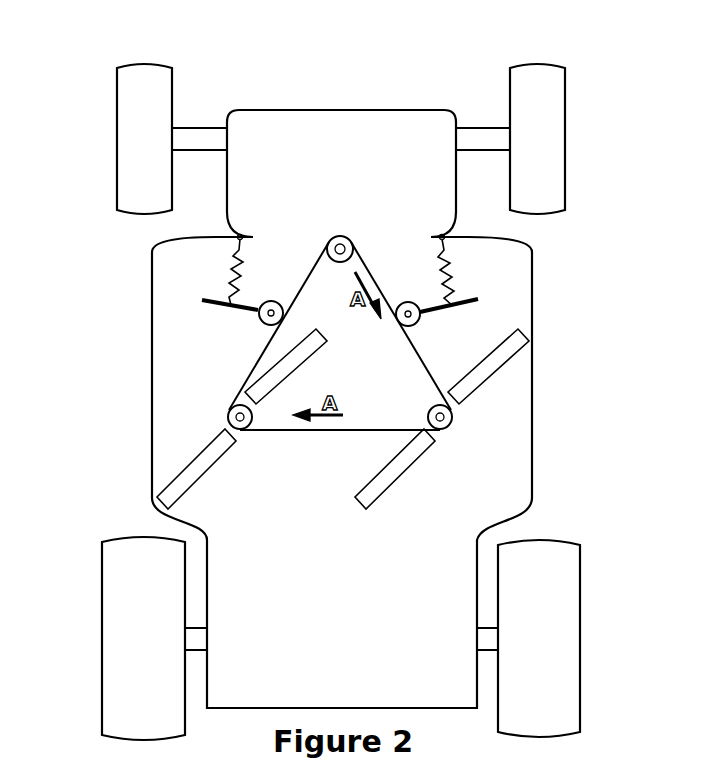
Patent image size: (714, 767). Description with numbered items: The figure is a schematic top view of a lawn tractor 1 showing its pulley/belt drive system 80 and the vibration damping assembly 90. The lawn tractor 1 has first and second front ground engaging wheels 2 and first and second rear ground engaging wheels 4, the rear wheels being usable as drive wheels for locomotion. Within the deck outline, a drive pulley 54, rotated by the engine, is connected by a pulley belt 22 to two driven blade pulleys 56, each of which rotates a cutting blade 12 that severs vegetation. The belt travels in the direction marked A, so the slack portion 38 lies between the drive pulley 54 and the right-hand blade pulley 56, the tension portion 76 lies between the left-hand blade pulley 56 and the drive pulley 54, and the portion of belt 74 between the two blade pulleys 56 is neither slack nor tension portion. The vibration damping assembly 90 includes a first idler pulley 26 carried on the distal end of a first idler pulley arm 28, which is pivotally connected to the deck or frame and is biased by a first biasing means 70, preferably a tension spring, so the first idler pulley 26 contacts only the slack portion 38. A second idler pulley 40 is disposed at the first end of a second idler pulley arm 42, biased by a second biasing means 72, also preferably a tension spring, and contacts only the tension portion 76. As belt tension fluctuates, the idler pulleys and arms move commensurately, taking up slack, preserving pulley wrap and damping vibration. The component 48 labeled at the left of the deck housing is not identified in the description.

The lawn tractor 1 is at (272, 80).
The front ground engaging wheels 2 is at (125, 130).
The rear ground engaging wheels 4 is at (125, 596).
The cutting blade 12 is at (183, 482).
The pulley belt 22 is at (312, 258).
The first idler pulley 26 is at (412, 301).
The first idler pulley arm 28 is at (443, 313).
The slack portion 38 is at (427, 377).
The second idler pulley 40 is at (272, 300).
The second idler pulley arm 42 is at (245, 302).
The frame 48 is at (195, 352).
The drive pulley 54 is at (340, 234).
The blade pulley 56 is at (230, 418).
The first biasing means 70 is at (452, 274).
The second biasing means 72 is at (227, 279).
The portion of belt between the two driven pulleys 74 is at (283, 432).
The tension portion 76 is at (260, 353).
The pulley/belt drive system 80 is at (388, 109).
The vibration damping assembly 90 is at (330, 92).